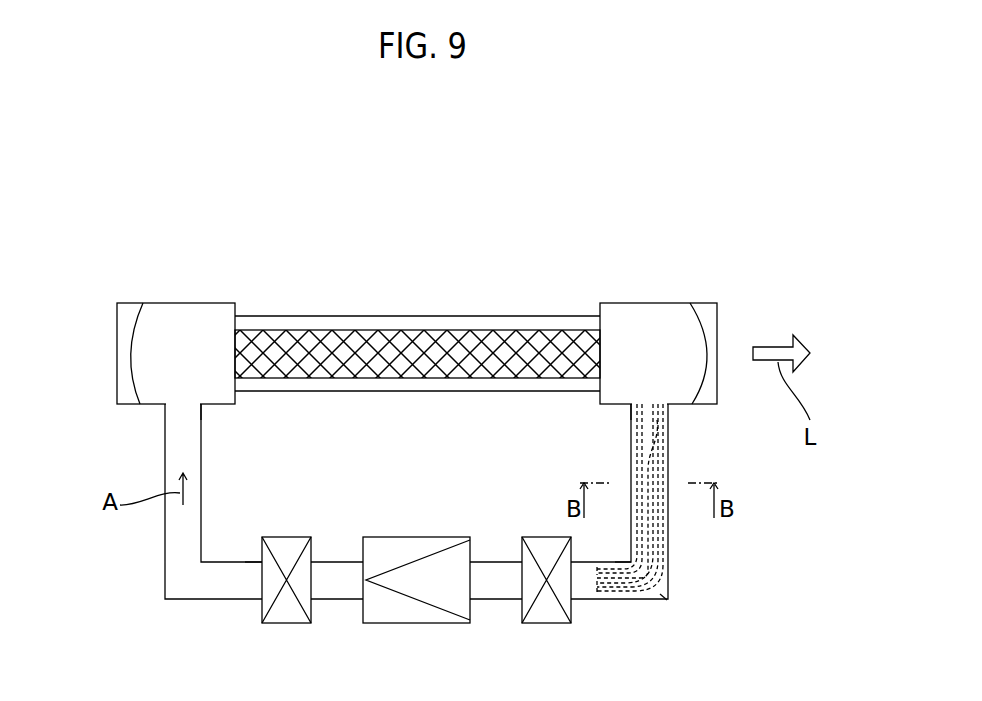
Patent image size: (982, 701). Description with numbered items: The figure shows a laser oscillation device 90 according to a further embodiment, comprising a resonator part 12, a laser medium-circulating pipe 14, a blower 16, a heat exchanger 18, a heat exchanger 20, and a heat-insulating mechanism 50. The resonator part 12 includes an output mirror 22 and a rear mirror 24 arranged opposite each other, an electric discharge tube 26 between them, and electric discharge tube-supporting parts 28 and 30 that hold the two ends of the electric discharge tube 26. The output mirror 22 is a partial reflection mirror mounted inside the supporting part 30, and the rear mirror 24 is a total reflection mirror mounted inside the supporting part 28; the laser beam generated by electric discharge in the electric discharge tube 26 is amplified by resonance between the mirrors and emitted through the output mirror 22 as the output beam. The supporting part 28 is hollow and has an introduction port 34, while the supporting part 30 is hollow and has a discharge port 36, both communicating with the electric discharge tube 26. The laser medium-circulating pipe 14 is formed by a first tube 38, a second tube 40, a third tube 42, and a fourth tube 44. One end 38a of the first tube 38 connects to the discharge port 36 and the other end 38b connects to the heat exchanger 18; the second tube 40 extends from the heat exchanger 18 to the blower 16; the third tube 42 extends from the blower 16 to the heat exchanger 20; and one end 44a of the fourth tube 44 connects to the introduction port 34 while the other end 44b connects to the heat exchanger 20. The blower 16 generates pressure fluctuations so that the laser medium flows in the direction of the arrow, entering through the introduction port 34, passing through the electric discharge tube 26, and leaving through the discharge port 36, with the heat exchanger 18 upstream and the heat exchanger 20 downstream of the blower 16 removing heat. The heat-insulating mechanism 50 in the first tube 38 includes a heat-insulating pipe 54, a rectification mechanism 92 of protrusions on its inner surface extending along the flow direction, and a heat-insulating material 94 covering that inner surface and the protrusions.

The laser oscillation device 90 is at (720, 144).
The resonator part 12 is at (420, 325).
The laser medium-circulating pipe 14 is at (423, 552).
The blower 16 is at (410, 625).
The heat exchanger 18 is at (552, 625).
The heat exchanger 20 is at (283, 625).
The output mirror 22 is at (710, 308).
The rear mirror 24 is at (128, 310).
The electric discharge tube 26 is at (460, 392).
The electric discharge tube-supporting part 28 is at (178, 303).
The electric discharge tube-supporting part 30 is at (651, 303).
The introduction port 34 is at (183, 404).
The discharge port 36 is at (648, 404).
The first tube 38 is at (668, 561).
The one end of the first tube 38a is at (631, 407).
The other end of the first tube 38b is at (631, 561).
The second tube 40 is at (494, 601).
The third tube 42 is at (331, 601).
The fourth tube 44 is at (178, 602).
The one end of the fourth tube 44a is at (205, 407).
The other end of the fourth tube 44b is at (262, 562).
The heat-insulating mechanism 50 is at (676, 528).
The heat-insulating pipe 54 is at (665, 599).
The rectification mechanism 92 is at (664, 428).
The heat-insulating material 94 is at (664, 456).